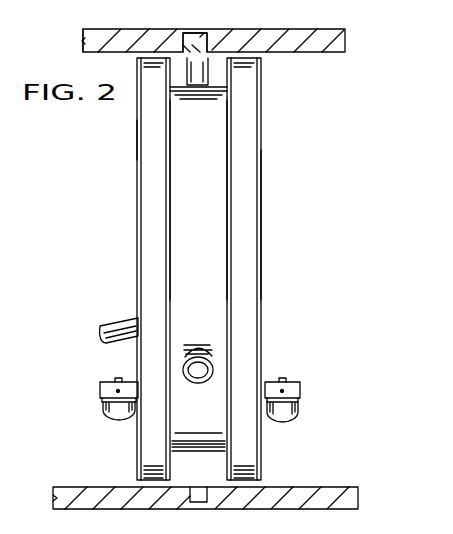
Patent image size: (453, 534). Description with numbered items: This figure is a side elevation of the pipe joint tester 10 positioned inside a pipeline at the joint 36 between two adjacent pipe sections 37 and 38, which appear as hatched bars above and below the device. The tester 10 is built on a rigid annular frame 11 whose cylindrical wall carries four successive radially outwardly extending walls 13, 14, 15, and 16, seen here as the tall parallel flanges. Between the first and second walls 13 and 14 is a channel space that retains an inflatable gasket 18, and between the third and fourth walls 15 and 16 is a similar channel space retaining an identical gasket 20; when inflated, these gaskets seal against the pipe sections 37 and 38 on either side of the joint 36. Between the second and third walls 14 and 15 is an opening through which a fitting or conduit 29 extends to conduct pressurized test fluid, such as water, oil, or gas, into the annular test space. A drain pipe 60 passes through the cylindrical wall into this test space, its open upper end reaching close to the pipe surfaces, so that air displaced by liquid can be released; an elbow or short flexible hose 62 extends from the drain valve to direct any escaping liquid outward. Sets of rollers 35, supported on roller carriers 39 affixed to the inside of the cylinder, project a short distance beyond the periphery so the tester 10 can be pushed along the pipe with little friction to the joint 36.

The tester 10 is at (270, 135).
The rigid annular frame 11 is at (213, 191).
The first radially outwardly extending wall 13 is at (137, 210).
The second radially outwardly extending wall 14 is at (170, 209).
The third radially outwardly extending wall 15 is at (228, 265).
The fourth radially outwardly extending wall 16 is at (262, 263).
The gasket 18 is at (148, 141).
The gasket 20 is at (262, 206).
The fitting or conduit 29 is at (189, 325).
The rollers 35 is at (121, 419).
The joint 36 is at (207, 33).
The pipe section 37 is at (88, 46).
The pipe section 38 is at (350, 37).
The roller carriers 39 is at (128, 386).
The drain pipe 60 is at (198, 76).
The elbow or flexible hose 62 is at (126, 320).